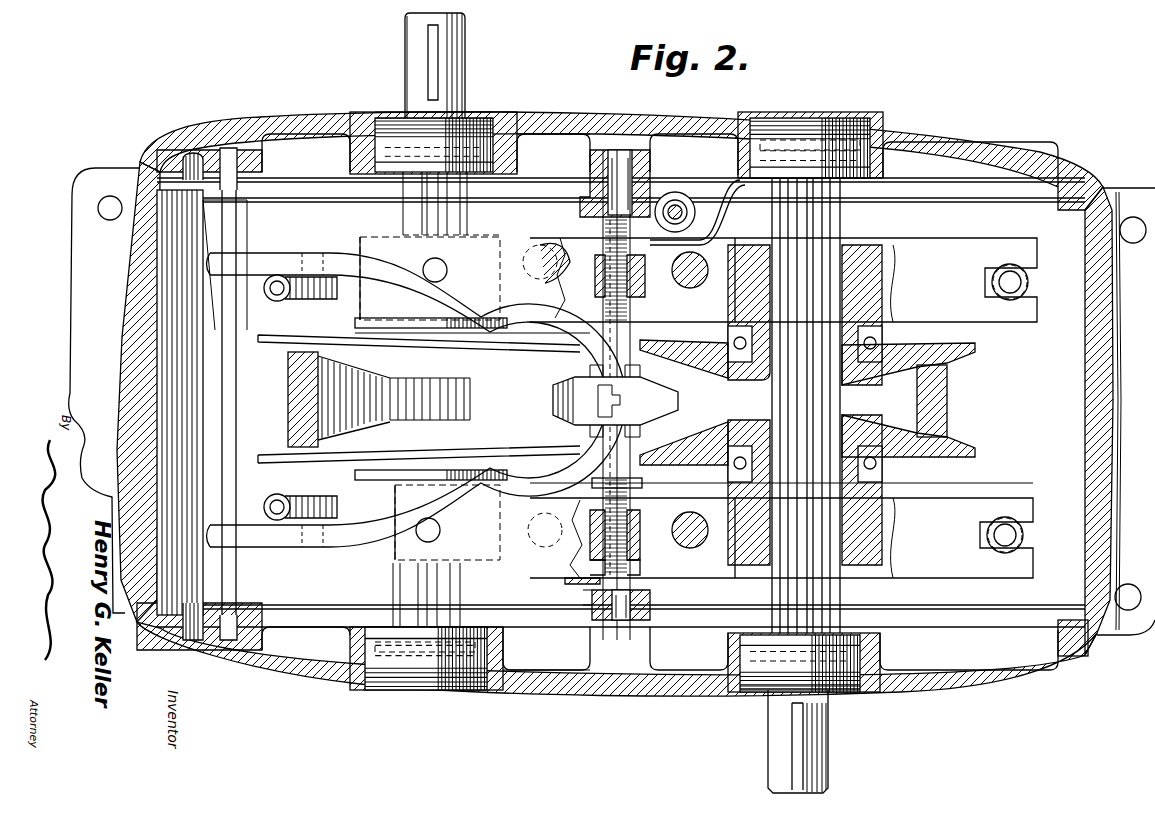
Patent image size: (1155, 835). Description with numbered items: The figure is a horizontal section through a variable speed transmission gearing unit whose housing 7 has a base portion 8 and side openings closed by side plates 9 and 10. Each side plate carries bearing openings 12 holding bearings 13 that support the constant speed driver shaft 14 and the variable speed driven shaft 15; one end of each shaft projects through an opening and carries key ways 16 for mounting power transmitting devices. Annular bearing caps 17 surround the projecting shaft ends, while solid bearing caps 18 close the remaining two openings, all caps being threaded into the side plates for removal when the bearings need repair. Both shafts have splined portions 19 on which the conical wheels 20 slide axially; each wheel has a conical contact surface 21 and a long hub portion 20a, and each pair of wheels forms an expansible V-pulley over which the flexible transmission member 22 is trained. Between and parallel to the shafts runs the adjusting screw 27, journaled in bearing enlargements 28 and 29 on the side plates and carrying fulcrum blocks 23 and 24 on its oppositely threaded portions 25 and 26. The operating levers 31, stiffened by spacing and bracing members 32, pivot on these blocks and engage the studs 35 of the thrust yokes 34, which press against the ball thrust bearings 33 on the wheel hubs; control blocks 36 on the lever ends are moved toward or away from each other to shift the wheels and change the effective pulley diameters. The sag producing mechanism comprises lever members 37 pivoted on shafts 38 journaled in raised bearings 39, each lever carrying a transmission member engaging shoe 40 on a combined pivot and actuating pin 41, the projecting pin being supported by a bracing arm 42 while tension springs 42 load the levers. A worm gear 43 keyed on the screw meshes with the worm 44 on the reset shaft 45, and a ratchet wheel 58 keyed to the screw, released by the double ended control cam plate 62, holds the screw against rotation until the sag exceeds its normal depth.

The housing 7 is at (138, 326).
The base portion 8 is at (72, 233).
The side plate 9 is at (580, 120).
The side plate 10 is at (585, 690).
The bearing openings 12 is at (357, 128).
The bearings 13 is at (385, 148).
The constant speed driver shaft 14 is at (405, 60).
The variable speed driven shaft 15 is at (830, 746).
The key ways 16 is at (438, 68).
The bearing caps 17 is at (480, 121).
The solid bearing caps 18 is at (840, 108).
The splined portions 19 is at (402, 200).
The conical wheels 20 is at (275, 340).
The hub portion 20a is at (860, 585).
The conical contact surface 21 is at (290, 352).
The flexible transmission member 22 is at (296, 392).
The fulcrum block 23 is at (645, 295).
The fulcrum block 24 is at (640, 522).
The threaded portion 25 is at (604, 248).
The threaded portion 26 is at (632, 506).
The adjusting screw 27 is at (633, 338).
The bearing enlargement 28 is at (592, 140).
The bearing enlargement 29 is at (580, 645).
The operating levers 31 is at (930, 244).
The spacing and bracing members 32 is at (558, 242).
The ball thrust bearing 33 is at (355, 323).
The thrust yoke 34 is at (368, 248).
The studs 35 is at (447, 270).
The control blocks 36 is at (1028, 282).
The lever members 37 is at (348, 547).
The shafts 38 is at (238, 406).
The raised bearings 39 is at (252, 186).
The transmission member engaging shoe 40 is at (680, 400).
The combined pivot and actuating pin 41 is at (640, 562).
The bracing arm 42 is at (297, 300).
The worm gear 43 is at (590, 190).
The worm 44 is at (683, 200).
The reset shaft 45 is at (674, 200).
The ratchet wheel 58 is at (655, 598).
The double ended control cam plate 62 is at (566, 581).